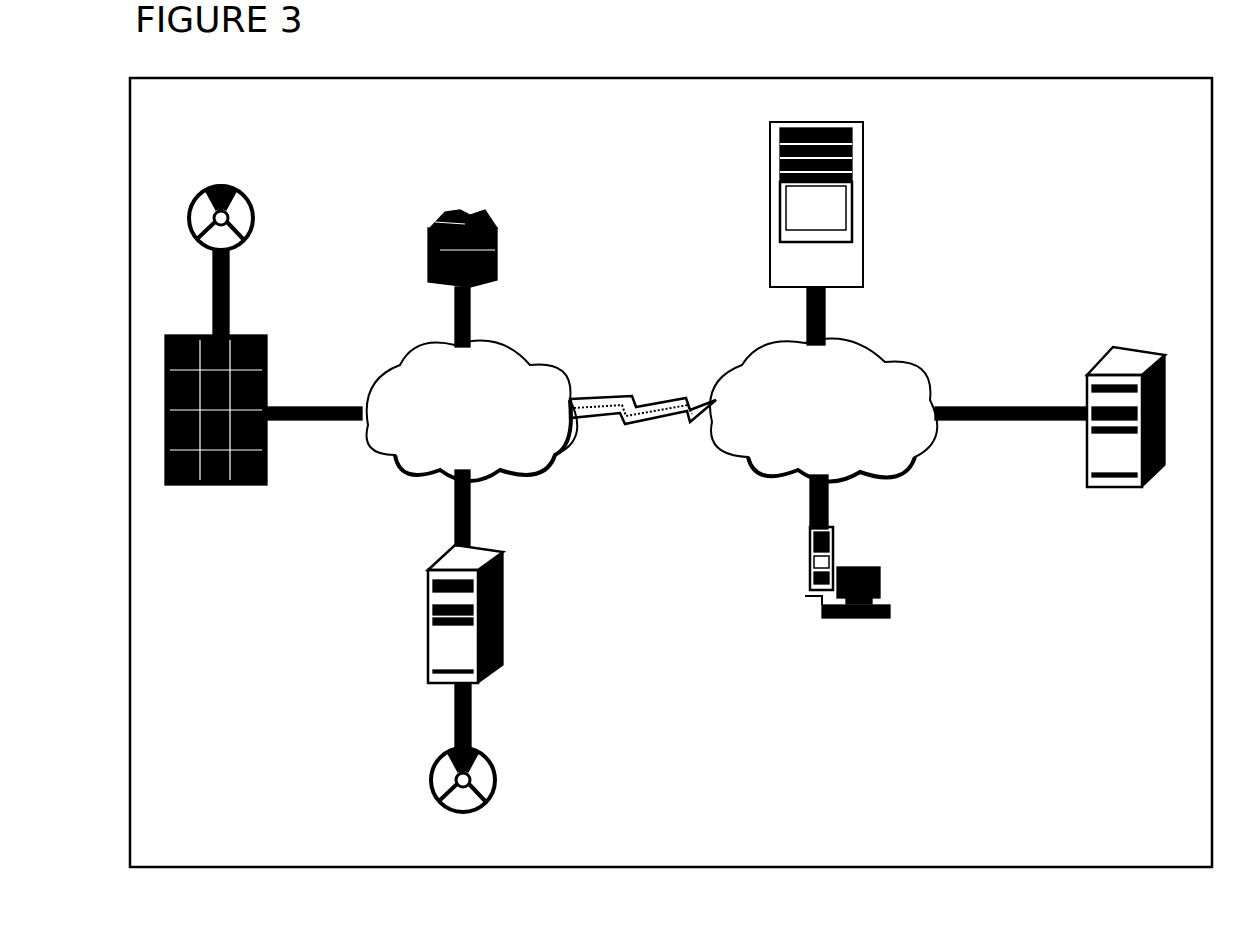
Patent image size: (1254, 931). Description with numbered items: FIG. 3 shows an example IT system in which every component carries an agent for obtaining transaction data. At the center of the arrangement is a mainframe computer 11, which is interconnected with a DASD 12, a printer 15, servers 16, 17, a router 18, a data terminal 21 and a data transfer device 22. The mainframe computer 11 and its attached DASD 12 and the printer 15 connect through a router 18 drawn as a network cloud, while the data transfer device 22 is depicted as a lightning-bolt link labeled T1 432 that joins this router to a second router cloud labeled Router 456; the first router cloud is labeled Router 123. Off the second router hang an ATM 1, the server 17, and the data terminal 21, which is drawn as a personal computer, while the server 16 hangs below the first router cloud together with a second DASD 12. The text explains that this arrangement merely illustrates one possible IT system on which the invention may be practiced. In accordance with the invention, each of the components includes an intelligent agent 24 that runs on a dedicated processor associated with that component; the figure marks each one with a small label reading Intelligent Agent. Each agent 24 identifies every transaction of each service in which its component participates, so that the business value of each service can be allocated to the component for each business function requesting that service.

The mainframe computer 11 is at (281, 435).
The DASD / router 456 is at (551, 321).
The printer 15 is at (443, 255).
The router 18 is at (472, 400).
The router 123 is at (460, 474).
The T1 link 432 is at (643, 398).
The data transfer device 22 is at (668, 420).
The ATM 1 is at (816, 220).
The server 17 is at (1063, 397).
The server 16 is at (526, 614).
The DASD 12 is at (517, 750).
The data terminal 21 is at (833, 572).
The intelligent agent 24 is at (250, 337).